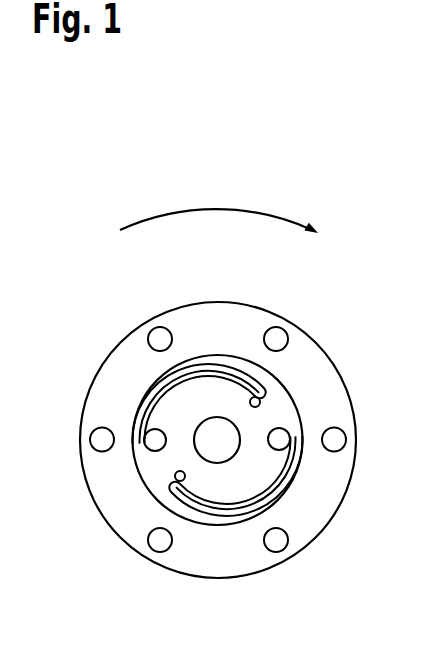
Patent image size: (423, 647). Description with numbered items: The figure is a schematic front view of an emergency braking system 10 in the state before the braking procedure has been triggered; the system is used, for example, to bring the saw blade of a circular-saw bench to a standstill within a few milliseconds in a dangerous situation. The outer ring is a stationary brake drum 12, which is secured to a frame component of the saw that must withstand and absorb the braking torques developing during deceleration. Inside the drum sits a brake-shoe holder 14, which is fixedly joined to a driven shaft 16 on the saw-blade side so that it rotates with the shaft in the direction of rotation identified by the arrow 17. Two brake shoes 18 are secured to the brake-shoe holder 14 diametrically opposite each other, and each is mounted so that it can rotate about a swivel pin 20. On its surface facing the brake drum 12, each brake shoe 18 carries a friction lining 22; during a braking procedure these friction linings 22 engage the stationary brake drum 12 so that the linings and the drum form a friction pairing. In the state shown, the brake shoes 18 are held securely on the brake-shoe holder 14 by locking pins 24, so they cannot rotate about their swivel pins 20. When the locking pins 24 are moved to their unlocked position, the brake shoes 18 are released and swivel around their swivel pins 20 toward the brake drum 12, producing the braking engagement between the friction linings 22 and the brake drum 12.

The emergency braking system 10 is at (362, 267).
The brake drum 12 is at (103, 397).
The brake-shoe holder 14 is at (178, 407).
The driven shaft 16 is at (214, 430).
The arrow 17 is at (207, 210).
The brake shoe 18 is at (287, 430).
The swivel pin 20 is at (282, 434).
The friction lining 22 is at (206, 367).
The locking pin 24 is at (255, 396).